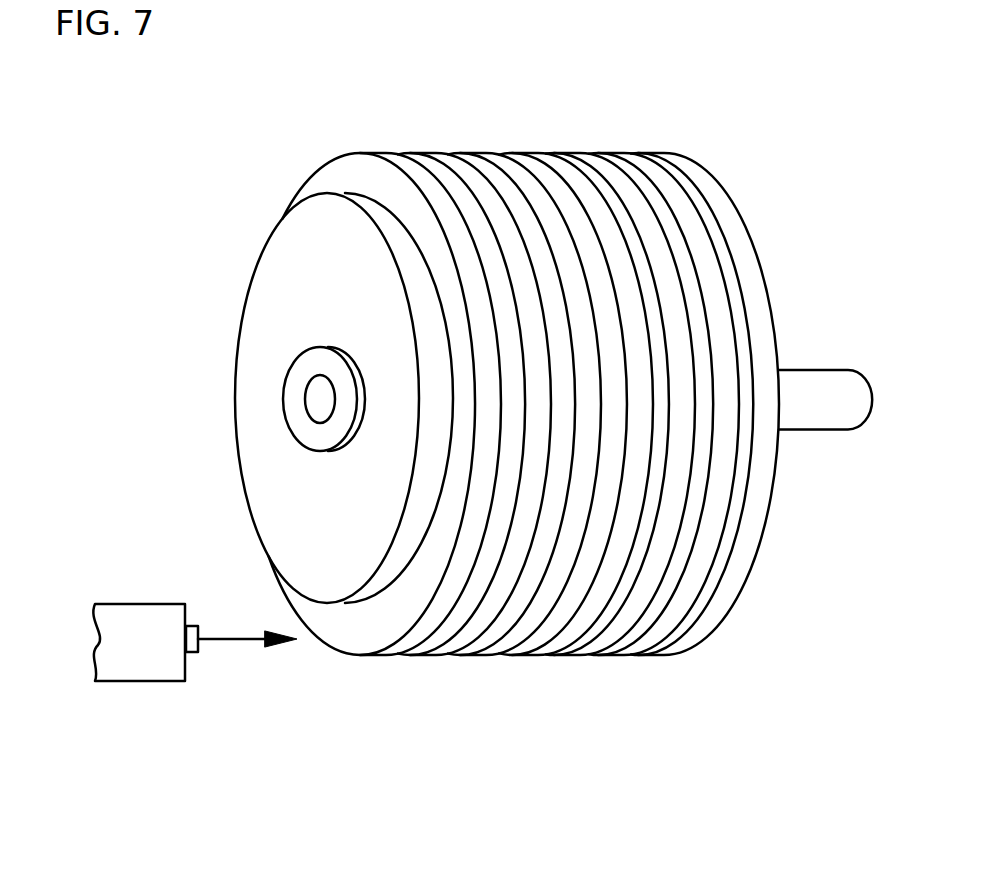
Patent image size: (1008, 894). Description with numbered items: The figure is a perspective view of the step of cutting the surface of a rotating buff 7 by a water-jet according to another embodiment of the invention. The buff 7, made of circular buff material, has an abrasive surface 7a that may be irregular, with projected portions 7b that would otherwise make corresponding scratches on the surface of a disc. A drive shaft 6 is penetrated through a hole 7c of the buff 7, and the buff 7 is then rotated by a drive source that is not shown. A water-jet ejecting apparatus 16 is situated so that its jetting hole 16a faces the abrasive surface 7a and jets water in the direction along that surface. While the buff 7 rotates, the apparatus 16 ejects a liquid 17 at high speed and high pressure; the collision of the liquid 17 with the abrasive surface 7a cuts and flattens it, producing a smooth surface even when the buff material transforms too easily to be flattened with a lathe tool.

The buff 7 is at (507, 408).
The abrasive surface 7a is at (513, 645).
The projected portions 7b is at (652, 153).
The hole 7c is at (312, 399).
The drive shaft 6 is at (828, 350).
The water-jet ejecting apparatus 16 is at (123, 588).
The jetting hole 16a is at (200, 608).
The liquid 17 is at (218, 641).